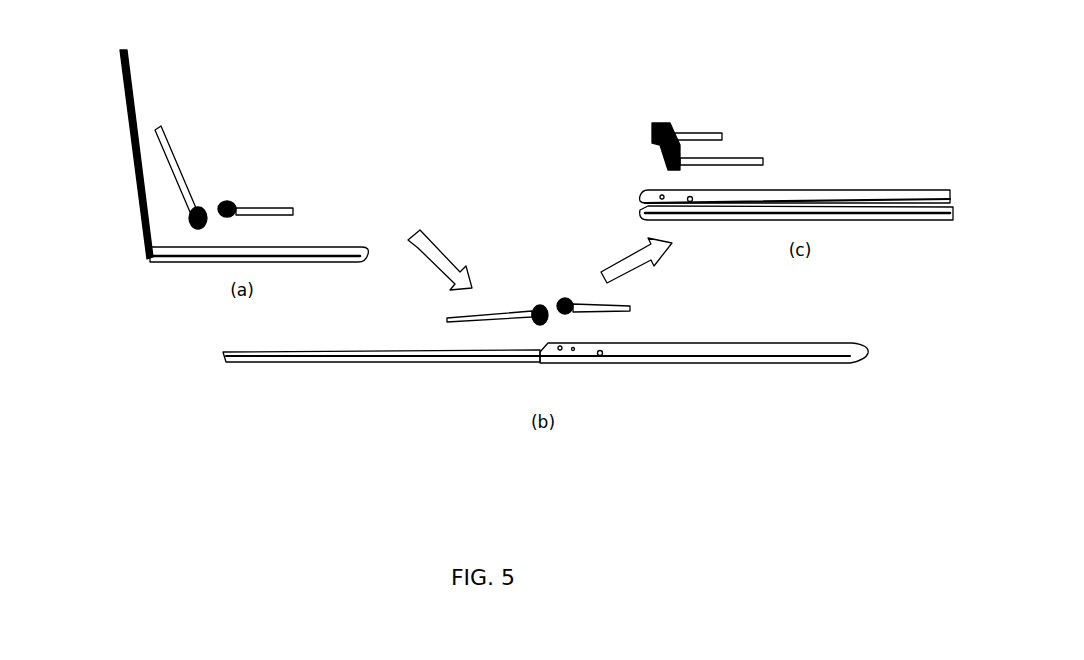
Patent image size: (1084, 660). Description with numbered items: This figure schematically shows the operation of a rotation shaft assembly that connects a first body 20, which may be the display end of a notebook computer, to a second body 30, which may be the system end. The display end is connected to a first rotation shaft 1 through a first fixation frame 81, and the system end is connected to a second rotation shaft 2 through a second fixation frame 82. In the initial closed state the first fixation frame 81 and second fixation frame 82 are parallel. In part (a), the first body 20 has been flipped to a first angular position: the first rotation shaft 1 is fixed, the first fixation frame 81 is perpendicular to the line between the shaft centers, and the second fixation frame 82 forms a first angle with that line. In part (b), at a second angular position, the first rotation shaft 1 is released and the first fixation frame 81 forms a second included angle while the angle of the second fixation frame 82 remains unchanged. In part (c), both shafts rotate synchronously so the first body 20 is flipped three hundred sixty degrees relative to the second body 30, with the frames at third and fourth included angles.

The first body 20 is at (137, 182).
The second body 30 is at (220, 255).
The first rotation shaft 1 is at (198, 210).
The second rotation shaft 2 is at (228, 203).
The first fixation frame 81 is at (168, 140).
The second fixation frame 82 is at (277, 210).